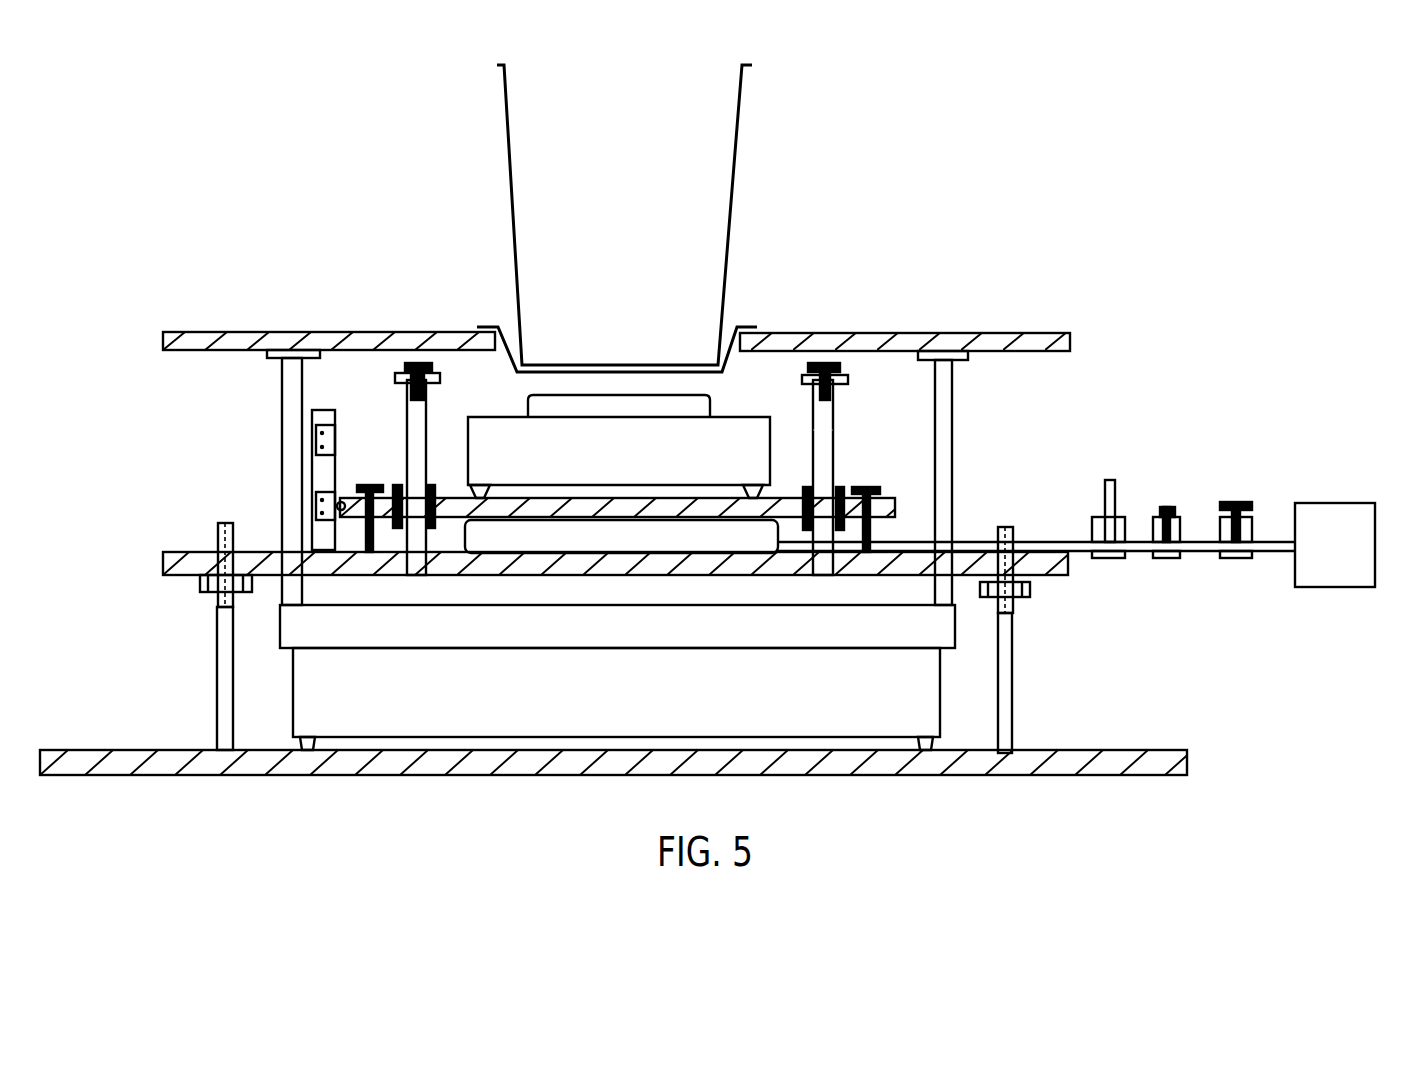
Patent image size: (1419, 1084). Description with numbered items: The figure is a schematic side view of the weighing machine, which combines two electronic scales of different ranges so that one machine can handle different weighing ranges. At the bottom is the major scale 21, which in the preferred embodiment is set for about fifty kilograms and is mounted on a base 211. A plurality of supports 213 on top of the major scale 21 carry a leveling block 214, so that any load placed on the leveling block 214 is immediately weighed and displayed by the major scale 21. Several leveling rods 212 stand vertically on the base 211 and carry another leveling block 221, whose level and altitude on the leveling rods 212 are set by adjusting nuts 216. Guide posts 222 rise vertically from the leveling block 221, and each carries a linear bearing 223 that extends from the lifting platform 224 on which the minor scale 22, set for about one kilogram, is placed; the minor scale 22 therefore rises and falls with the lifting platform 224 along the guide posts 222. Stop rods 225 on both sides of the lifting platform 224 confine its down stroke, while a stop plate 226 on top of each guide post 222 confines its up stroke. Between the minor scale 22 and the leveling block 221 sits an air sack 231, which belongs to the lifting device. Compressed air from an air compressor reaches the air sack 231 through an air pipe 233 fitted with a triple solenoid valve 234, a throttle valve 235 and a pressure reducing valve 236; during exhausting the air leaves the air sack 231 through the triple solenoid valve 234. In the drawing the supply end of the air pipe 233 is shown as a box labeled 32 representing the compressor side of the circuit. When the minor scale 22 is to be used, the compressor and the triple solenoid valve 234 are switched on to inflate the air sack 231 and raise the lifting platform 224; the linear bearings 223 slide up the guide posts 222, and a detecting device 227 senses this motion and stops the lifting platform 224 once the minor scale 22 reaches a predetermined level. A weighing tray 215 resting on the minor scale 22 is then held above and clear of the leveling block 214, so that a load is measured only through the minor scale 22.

The major scale 21 is at (640, 708).
The minor scale 22 is at (645, 465).
The controller 32 is at (1352, 560).
The base 211 is at (1157, 752).
The leveling rods 212 is at (217, 694).
The supports 213 is at (282, 432).
The leveling block 214 is at (193, 332).
The weighing tray 215 is at (478, 327).
The adjusting nuts 216 is at (200, 583).
The leveling block 221 is at (163, 563).
The guide posts 222 is at (427, 410).
The linear bearing 223 is at (800, 493).
The lifting platform 224 is at (895, 508).
The stop rods 225 is at (865, 430).
The stop plate 226 is at (395, 378).
The detecting device 227 is at (320, 481).
The air sack 231 is at (640, 550).
The air pipe 233 is at (1275, 540).
The triple solenoid valve 234 is at (1105, 558).
The throttle valve 235 is at (1167, 558).
The pressure reducing valve 236 is at (1233, 558).